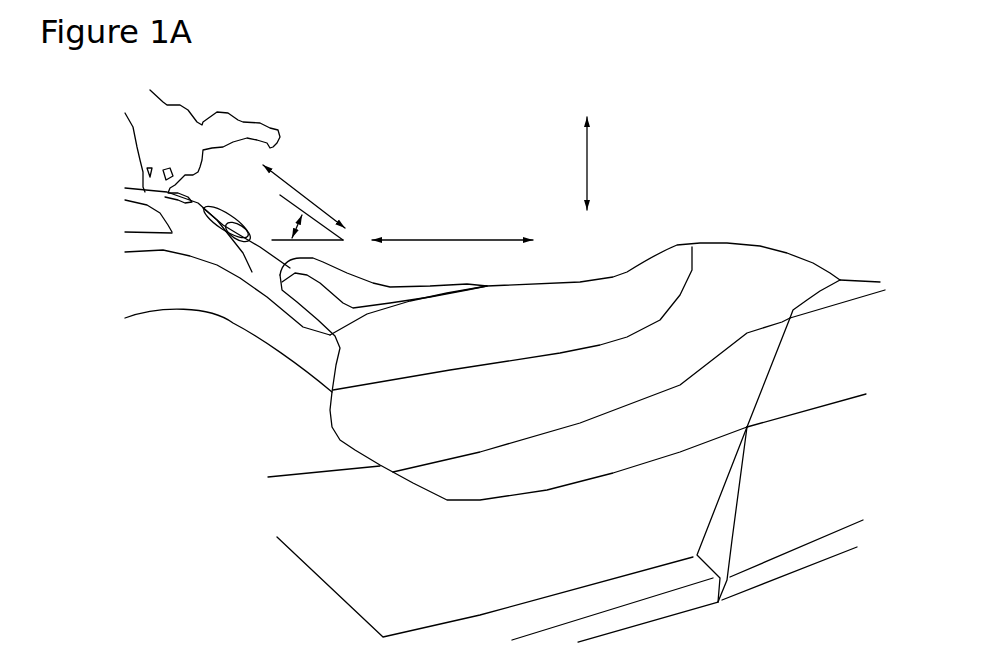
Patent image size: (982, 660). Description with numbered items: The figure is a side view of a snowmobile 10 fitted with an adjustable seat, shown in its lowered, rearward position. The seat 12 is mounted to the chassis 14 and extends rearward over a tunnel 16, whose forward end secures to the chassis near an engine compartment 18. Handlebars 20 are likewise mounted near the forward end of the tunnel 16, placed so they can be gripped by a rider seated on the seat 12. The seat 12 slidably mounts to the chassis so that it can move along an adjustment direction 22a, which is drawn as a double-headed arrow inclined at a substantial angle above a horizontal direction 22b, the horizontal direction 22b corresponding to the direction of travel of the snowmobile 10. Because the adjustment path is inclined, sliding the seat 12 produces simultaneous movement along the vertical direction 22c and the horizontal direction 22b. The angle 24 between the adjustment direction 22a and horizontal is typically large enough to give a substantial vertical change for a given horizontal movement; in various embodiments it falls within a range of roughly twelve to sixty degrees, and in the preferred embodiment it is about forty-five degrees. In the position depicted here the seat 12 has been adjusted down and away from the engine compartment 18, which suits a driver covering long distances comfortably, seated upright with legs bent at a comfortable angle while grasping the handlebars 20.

The snowmobile 10 is at (476, 97).
The seat 12 is at (618, 222).
The chassis 14 is at (277, 566).
The tunnel 16 is at (577, 551).
The engine compartment 18 is at (251, 346).
The handlebars 20 is at (180, 130).
The adjustment direction 22a is at (305, 193).
The horizontal direction 22b is at (453, 237).
The vertical direction 22c is at (587, 163).
The angle 24 is at (290, 227).